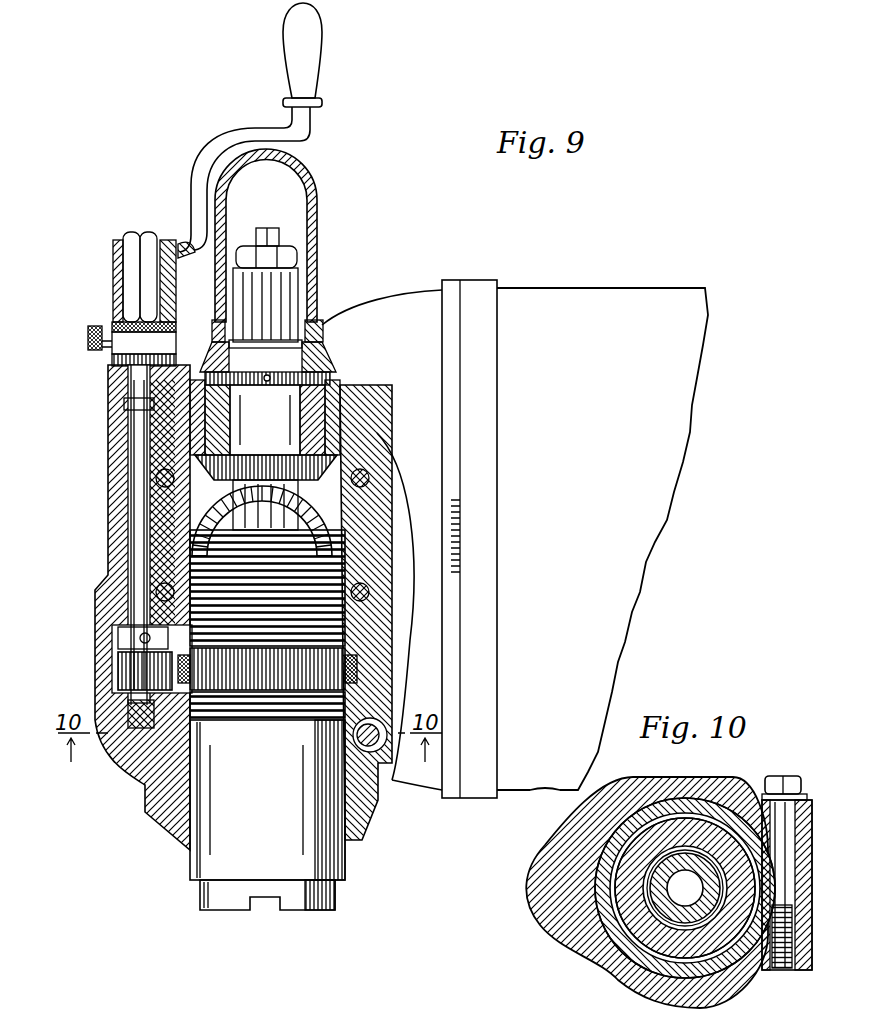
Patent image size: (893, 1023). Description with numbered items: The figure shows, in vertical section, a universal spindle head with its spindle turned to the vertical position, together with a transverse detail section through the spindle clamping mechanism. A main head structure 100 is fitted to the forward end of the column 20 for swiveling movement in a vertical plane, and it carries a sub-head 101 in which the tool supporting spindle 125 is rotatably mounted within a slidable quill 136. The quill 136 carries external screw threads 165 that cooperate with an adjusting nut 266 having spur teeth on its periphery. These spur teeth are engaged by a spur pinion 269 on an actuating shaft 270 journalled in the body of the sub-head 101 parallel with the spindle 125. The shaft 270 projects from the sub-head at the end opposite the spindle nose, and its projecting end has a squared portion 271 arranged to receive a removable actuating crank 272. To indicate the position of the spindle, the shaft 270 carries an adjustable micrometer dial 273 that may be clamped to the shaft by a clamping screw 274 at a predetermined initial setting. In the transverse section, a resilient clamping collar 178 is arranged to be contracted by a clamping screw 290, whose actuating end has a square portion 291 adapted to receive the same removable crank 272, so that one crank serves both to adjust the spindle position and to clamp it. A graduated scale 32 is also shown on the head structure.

In FIG. 9, the removable actuating crank 272 is at (296, 61).
In FIG. 9, the squared portion 271 is at (137, 277).
In FIG. 9, the clamping screw 274 is at (99, 320).
In FIG. 9, the adjustable micrometer dial 273 is at (116, 364).
In FIG. 9, the actuating shaft 270 is at (140, 517).
In FIG. 9, the spur pinion 269 is at (130, 672).
In FIG. 9, the external screw threads 165 is at (340, 550).
In FIG. 9, the adjusting nut 266 is at (335, 676).
In FIG. 9, the quill 136 is at (207, 866).
In FIG. 10, the quill 136 is at (687, 824).
In FIG. 9, the tool supporting spindle 125 is at (238, 902).
In FIG. 10, the tool supporting spindle 125 is at (688, 900).
In FIG. 9, the resilient clamping collar 178 is at (360, 833).
In FIG. 10, the resilient clamping collar 178 is at (638, 809).
In FIG. 9, the clamping screw 290 is at (378, 738).
In FIG. 10, the clamping screw 290 is at (786, 909).
In FIG. 9, the main head structure 100 is at (420, 279).
In FIG. 9, the scale 32 is at (462, 522).
In FIG. 9, the column 20 is at (638, 300).
In FIG. 9, the sub-head 101 is at (146, 855).
In FIG. 10, the sub-head 101 is at (551, 972).
In FIG. 10, the square portion 291 is at (800, 764).